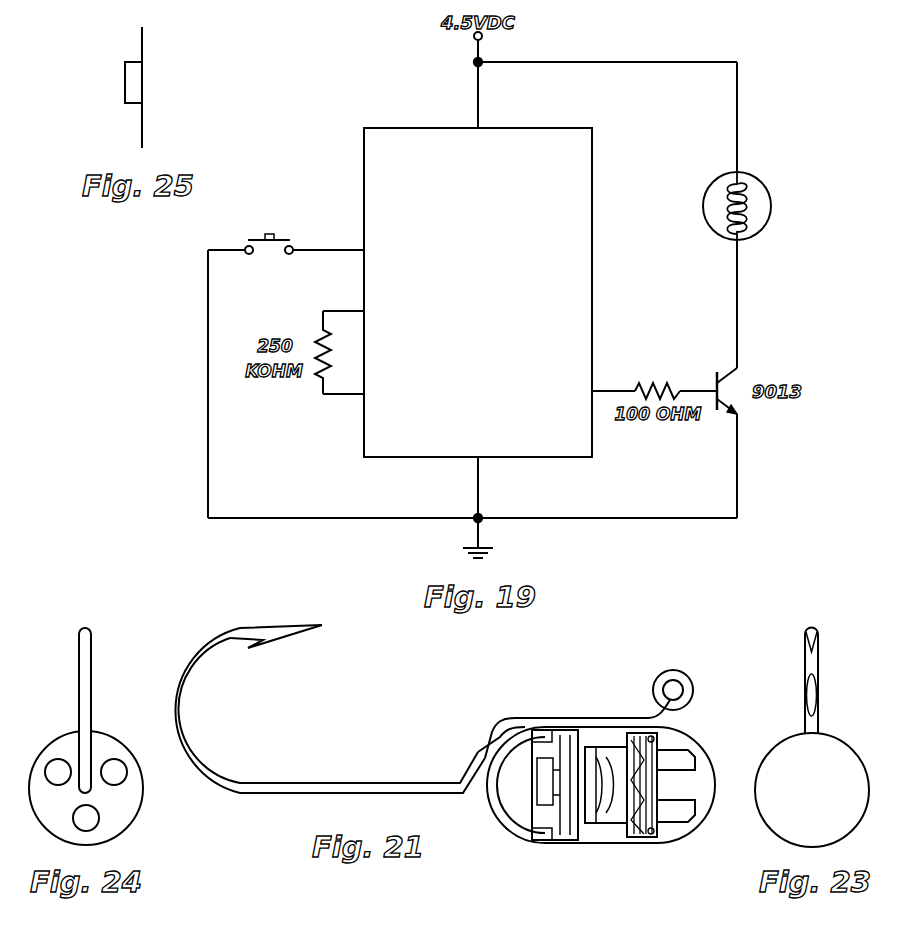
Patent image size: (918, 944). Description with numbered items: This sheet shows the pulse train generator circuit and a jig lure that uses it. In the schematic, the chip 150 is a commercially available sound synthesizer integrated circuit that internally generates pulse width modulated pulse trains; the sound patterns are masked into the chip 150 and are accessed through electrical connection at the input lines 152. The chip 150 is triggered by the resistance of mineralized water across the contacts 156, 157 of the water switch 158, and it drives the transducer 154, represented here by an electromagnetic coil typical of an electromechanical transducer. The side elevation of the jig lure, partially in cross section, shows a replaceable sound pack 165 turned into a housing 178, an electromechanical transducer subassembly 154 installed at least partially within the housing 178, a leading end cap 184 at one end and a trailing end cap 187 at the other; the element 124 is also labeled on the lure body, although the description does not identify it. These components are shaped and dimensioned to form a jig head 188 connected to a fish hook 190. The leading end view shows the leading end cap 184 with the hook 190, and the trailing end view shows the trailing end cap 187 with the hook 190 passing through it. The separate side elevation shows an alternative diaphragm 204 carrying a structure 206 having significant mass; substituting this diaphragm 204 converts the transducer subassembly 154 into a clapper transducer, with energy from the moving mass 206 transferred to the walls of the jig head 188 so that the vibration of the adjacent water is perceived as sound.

In FIG. 19, the IC chip 150 is at (585, 163).
In FIG. 19, the input lines 152 is at (364, 250).
In FIG. 25, the transducer 154 is at (143, 68).
In FIG. 19, the transducer 154 is at (766, 183).
In FIG. 21, the transducer 154 is at (555, 858).
In FIG. 19, the contact 156 is at (247, 253).
In FIG. 19, the contact 157 is at (294, 248).
In FIG. 19, the water switch 158 is at (268, 236).
In FIG. 25, the alternative diaphragm 204 is at (138, 146).
In FIG. 25, the mass structure 206 is at (125, 76).
In FIG. 24, the trailing end cap 187 is at (33, 750).
In FIG. 24, the fish hook 190 is at (93, 664).
In FIG. 21, the fish hook 190 is at (304, 788).
In FIG. 23, the fish hook 190 is at (820, 647).
In FIG. 21, the jig head 188 is at (705, 737).
In FIG. 21, the lure body housing 124 is at (715, 805).
In FIG. 21, the housing 178 is at (602, 834).
In FIG. 21, the sound pack 165 is at (648, 853).
In FIG. 23, the leading end cap 184 is at (832, 750).